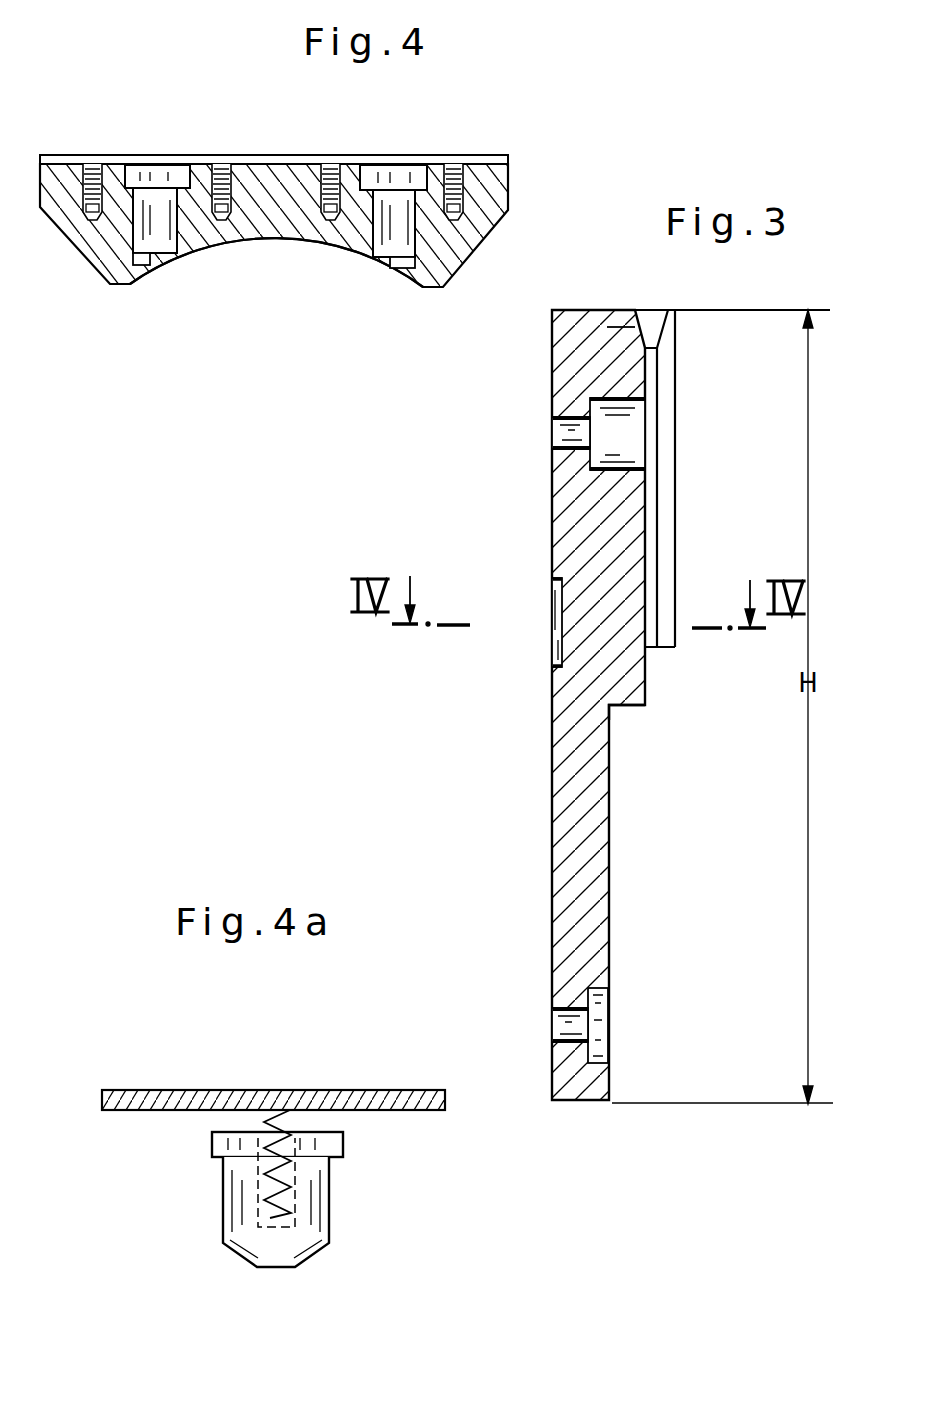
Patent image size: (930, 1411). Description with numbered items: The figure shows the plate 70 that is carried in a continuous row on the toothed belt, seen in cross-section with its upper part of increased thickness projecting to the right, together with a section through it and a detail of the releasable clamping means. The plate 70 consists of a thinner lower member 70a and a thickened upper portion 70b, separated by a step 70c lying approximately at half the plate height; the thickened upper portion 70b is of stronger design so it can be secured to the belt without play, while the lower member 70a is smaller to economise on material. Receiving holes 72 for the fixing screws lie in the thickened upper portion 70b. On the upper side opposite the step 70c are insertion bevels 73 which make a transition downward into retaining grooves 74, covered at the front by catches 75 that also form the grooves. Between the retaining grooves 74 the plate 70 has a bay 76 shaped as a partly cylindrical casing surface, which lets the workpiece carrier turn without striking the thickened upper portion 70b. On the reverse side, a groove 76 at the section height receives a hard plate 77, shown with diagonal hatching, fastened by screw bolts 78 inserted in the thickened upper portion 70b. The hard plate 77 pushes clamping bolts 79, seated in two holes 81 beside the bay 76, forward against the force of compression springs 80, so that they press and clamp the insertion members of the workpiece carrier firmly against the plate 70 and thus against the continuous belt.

In FIG. 3, the plate 70 is at (609, 925).
In FIG. 3, the lower member 70a is at (583, 872).
In FIG. 3, the thickened upper portion 70b is at (610, 532).
In FIG. 3, the step 70c is at (625, 707).
In FIG. 3, the receiving holes 72 is at (613, 443).
In FIG. 3, the insertion bevels 73 is at (607, 327).
In FIG. 4, the retaining grooves 74 is at (152, 267).
In FIG. 3, the retaining grooves 74 is at (650, 445).
In FIG. 4, the catches 75 is at (414, 288).
In FIG. 3, the catches 75 is at (662, 373).
In FIG. 4, the bay 76 is at (280, 164).
In FIG. 3, the bay 76 is at (555, 600).
In FIG. 4A, the hard plate 77 is at (187, 1092).
In FIG. 4, the screw bolts 78 is at (222, 185).
In FIG. 4A, the clamping bolts 79 is at (302, 1242).
In FIG. 4A, the compression springs 80 is at (278, 1110).
In FIG. 4, the holes 81 is at (160, 210).